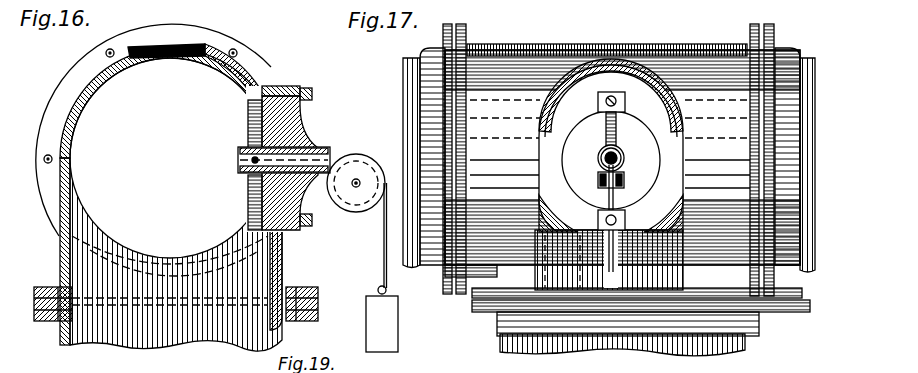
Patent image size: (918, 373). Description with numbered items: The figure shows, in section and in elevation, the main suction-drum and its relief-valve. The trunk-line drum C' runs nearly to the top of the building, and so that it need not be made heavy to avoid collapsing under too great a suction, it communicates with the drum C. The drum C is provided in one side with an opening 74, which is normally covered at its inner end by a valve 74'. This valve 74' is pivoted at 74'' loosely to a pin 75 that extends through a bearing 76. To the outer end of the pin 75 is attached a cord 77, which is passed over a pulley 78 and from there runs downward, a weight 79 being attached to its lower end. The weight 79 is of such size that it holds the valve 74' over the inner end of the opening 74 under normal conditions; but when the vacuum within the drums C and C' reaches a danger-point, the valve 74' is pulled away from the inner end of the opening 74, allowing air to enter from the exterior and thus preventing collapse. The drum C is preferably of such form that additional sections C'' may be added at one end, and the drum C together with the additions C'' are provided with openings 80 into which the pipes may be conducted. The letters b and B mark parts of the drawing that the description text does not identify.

In FIG. 16, the opening 74 is at (290, 143).
In FIG. 17, the opening 74 is at (562, 119).
In FIG. 16, the valve 74' is at (240, 132).
In FIG. 17, the valve 74' is at (630, 135).
In FIG. 16, the pivot 74'' is at (233, 202).
In FIG. 16, the pin 75 is at (310, 160).
In FIG. 16, the bearing 76 is at (306, 140).
In FIG. 17, the bearing 76 is at (614, 127).
In FIG. 16, the cord 77 is at (382, 258).
In FIG. 17, the cord 77 is at (597, 262).
In FIG. 16, the pulley 78 is at (352, 197).
In FIG. 17, the pulley 78 is at (600, 168).
In FIG. 16, the weight 79 is at (382, 324).
In FIG. 16, the openings 80 is at (213, 48).
In FIG. 17, the openings 80 is at (521, 55).
In FIG. 16, the drum C is at (58, 66).
In FIG. 17, the drum C is at (611, 79).
In FIG. 17, the trunk-line drum C' is at (396, 163).
In FIG. 17, the additional sections C'' is at (812, 150).
In FIG. 16, the base b is at (184, 340).
In FIG. 17, the base b is at (580, 340).
In FIG. 17, the bed B is at (472, 364).